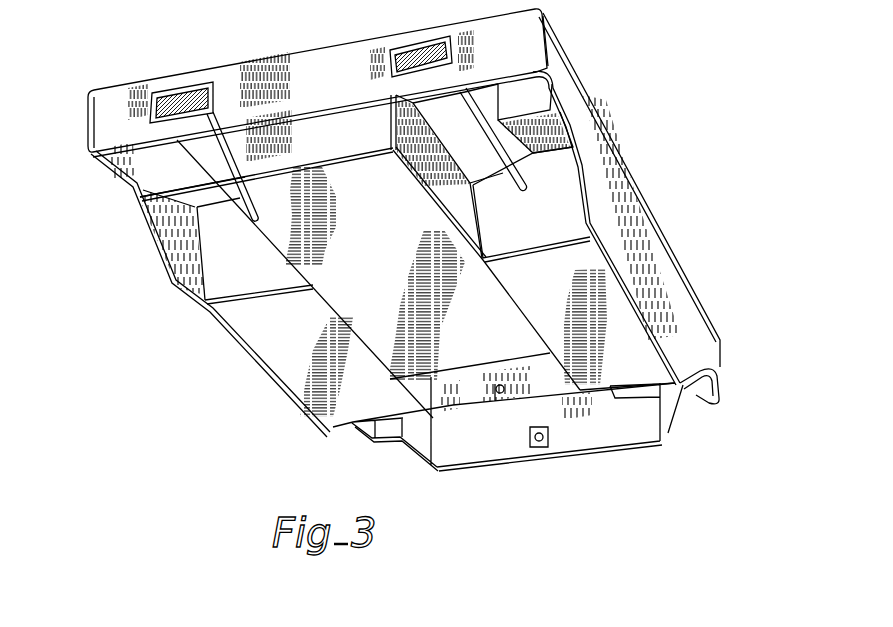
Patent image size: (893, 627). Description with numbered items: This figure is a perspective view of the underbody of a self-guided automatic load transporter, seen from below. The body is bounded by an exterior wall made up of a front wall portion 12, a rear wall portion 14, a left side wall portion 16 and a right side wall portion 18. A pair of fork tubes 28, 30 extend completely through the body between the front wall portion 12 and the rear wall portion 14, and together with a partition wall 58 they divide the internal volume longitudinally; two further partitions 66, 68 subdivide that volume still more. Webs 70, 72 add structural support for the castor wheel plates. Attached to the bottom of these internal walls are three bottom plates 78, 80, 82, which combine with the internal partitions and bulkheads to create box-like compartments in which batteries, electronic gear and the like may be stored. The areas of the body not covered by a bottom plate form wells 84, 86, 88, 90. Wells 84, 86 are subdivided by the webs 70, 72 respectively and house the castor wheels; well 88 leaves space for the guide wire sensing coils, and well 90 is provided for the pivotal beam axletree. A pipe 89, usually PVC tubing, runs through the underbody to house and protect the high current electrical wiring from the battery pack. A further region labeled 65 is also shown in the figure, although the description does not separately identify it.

The front wall portion 12 is at (325, 82).
The rear wall portion 14 is at (588, 433).
The left side wall portion 16 is at (123, 153).
The right side wall portion 18 is at (662, 257).
The fork tube 28 is at (214, 157).
The fork tube 30 is at (468, 158).
The partition wall 58 is at (421, 152).
The sloped panel 65 is at (342, 142).
The partition 66 is at (252, 264).
The partition 68 is at (566, 229).
The web 70 is at (201, 131).
The web 72 is at (530, 90).
The bottom plate 78 is at (301, 342).
The bottom plate 80 is at (394, 262).
The bottom plate 82 is at (563, 294).
The well 84 is at (198, 187).
The well 86 is at (543, 142).
The well 88 is at (450, 387).
The pipe 89 is at (508, 165).
The well 90 is at (505, 418).